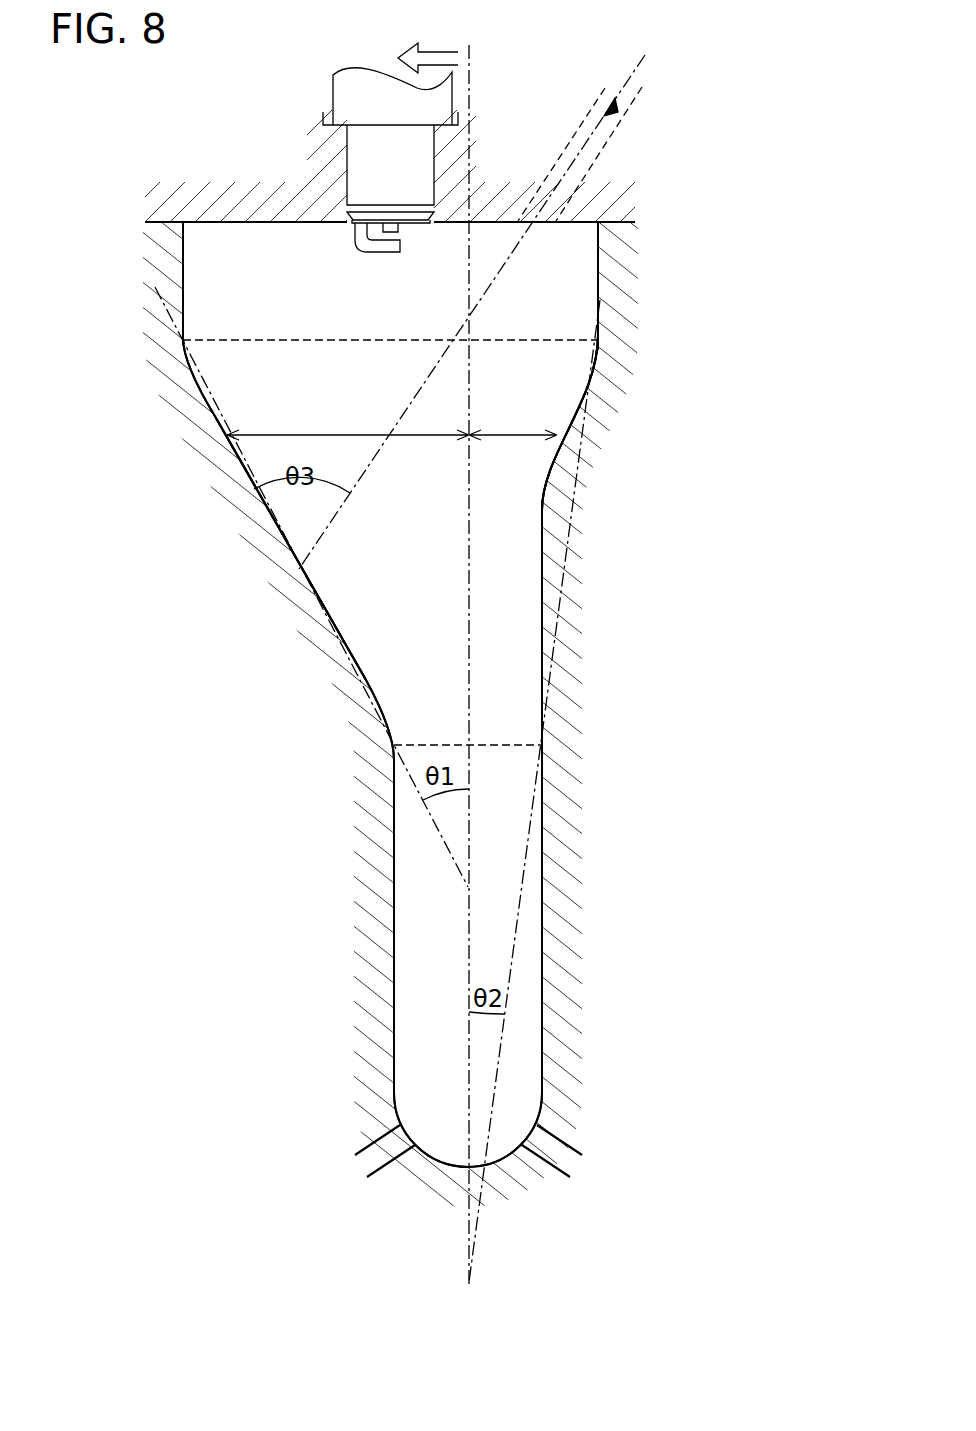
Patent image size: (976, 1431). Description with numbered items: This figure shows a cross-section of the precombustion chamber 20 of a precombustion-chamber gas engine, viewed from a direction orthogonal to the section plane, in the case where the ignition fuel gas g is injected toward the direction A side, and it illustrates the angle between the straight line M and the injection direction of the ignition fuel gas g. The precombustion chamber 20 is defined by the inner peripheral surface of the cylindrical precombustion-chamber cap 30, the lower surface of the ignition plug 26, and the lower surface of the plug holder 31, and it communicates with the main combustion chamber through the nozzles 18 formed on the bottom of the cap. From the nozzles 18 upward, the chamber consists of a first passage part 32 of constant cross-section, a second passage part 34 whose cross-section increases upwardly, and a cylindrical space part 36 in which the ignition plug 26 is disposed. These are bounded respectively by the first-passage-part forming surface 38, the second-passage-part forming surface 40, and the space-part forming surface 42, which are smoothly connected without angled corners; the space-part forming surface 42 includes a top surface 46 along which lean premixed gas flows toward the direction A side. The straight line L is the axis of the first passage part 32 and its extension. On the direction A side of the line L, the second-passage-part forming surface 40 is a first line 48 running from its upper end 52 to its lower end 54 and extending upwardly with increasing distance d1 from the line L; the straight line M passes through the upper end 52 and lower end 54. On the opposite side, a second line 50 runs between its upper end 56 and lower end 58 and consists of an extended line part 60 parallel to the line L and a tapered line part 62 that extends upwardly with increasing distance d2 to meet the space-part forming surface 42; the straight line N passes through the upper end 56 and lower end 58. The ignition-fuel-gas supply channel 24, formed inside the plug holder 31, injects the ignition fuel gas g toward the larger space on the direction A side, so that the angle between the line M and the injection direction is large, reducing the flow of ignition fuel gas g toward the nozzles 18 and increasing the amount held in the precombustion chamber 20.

The nozzles 18 is at (360, 1150).
The precombustion chamber 20 is at (420, 569).
The ignition-fuel-gas supply channel 24 is at (607, 135).
The ignition plug 26 is at (357, 98).
The precombustion-chamber cap 30 is at (278, 580).
The plug holder 31 is at (192, 207).
The first passage part 32 is at (520, 963).
The second passage part 34 is at (507, 582).
The space part 36 is at (577, 234).
The first-passage-part forming surface 38 is at (527, 1010).
The second-passage-part forming surface 40 is at (400, 507).
The space-part forming surface 42 is at (590, 265).
The top surface 46 is at (315, 228).
The first line 48 is at (255, 490).
The second line 50 is at (545, 495).
The upper end of the first line 52 is at (183, 340).
The lower end of the first line 54 is at (394, 745).
The upper end of the second line 56 is at (600, 340).
The lower end of the second line 58 is at (542, 745).
The extended line part 60 is at (543, 623).
The tapered line part 62 is at (575, 382).
The direction A is at (428, 47).
The straight line L is at (468, 503).
The straight line M is at (163, 313).
The straight line N is at (605, 312).
The ignition fuel gas g is at (640, 67).
The distance d1 is at (348, 423).
The distance d2 is at (513, 423).